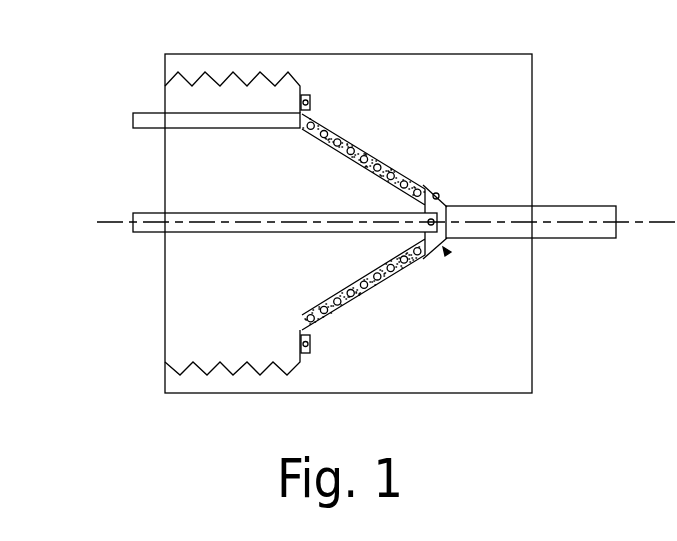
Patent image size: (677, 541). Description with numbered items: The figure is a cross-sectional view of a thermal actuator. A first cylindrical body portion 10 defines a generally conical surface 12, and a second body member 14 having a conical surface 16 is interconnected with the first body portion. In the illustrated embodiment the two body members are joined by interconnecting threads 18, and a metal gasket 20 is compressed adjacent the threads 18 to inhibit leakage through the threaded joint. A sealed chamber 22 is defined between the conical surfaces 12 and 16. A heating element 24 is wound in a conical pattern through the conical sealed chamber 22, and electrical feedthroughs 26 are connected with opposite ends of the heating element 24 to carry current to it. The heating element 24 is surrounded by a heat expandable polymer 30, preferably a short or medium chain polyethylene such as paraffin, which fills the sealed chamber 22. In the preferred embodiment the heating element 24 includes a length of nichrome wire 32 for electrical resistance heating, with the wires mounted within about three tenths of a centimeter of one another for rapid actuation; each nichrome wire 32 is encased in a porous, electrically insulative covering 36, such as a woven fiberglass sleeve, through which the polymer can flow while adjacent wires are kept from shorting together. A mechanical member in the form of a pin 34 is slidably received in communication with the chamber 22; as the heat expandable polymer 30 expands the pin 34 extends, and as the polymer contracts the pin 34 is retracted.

The first cylindrical body portion 10 is at (491, 100).
The conical surface 12 is at (441, 192).
The second body member 14 is at (306, 186).
The conical surface 16 is at (444, 254).
The interconnecting threads 18 is at (230, 372).
The metal gasket 20 is at (312, 100).
The sealed chamber 22 is at (447, 252).
The heating element 24 is at (352, 308).
The electrical feedthroughs 26 is at (148, 213).
The heat expandable polymer 30 is at (428, 234).
The nichrome wire 32 is at (340, 137).
The pin 34 is at (572, 206).
The porous electrically insulative covering 36 is at (375, 160).